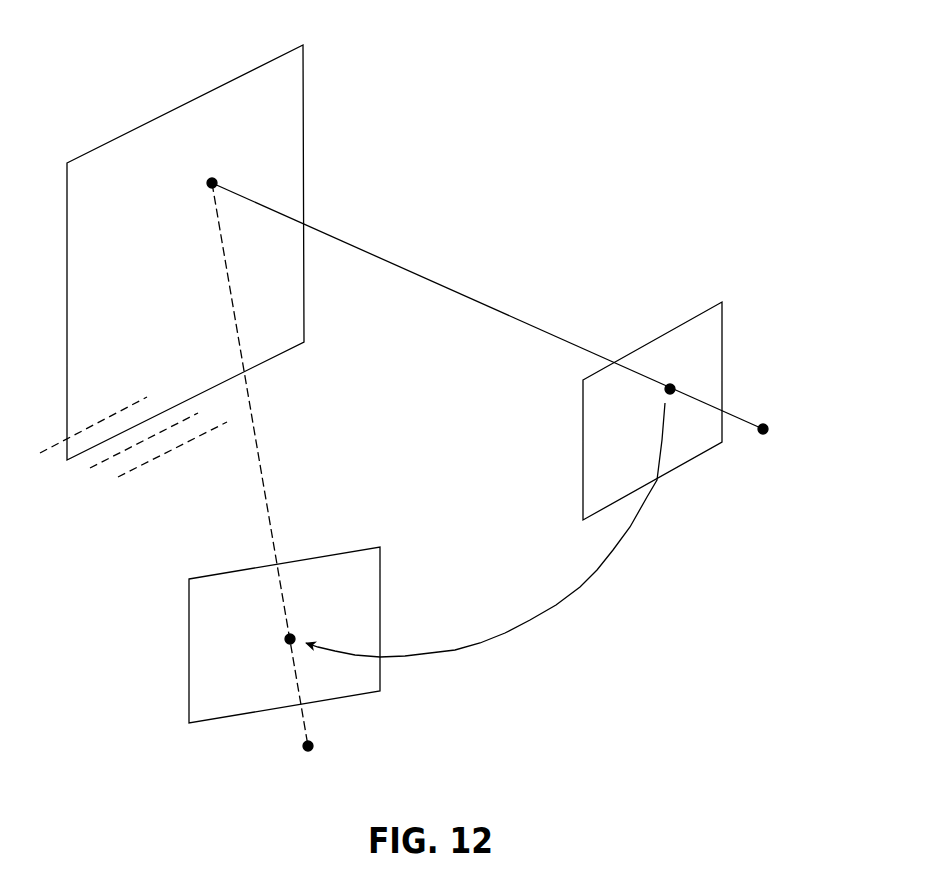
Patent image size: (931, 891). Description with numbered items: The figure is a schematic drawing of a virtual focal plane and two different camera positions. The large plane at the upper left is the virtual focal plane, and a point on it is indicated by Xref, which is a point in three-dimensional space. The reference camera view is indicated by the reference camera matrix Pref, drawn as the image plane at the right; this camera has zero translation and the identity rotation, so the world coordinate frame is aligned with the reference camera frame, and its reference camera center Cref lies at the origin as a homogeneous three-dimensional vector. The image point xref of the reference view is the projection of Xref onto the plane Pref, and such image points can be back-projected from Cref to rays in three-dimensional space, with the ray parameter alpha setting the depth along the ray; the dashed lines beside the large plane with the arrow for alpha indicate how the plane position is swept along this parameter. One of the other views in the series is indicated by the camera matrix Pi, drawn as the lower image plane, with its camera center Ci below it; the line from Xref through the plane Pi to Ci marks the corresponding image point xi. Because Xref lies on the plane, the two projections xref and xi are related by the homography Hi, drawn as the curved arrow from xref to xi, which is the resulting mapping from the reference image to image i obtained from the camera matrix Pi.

The point on the virtual focal plane Xref is at (485, 450).
The image point of the reference view xref is at (683, 379).
The reference camera center Cref is at (785, 432).
The reference camera matrix Pref is at (687, 411).
The image point in image i xi is at (299, 629).
The camera matrix for image i Pi is at (302, 635).
The camera center of image i Ci is at (322, 747).
The homography Hi is at (485, 530).
The ray parameter alpha is at (122, 519).